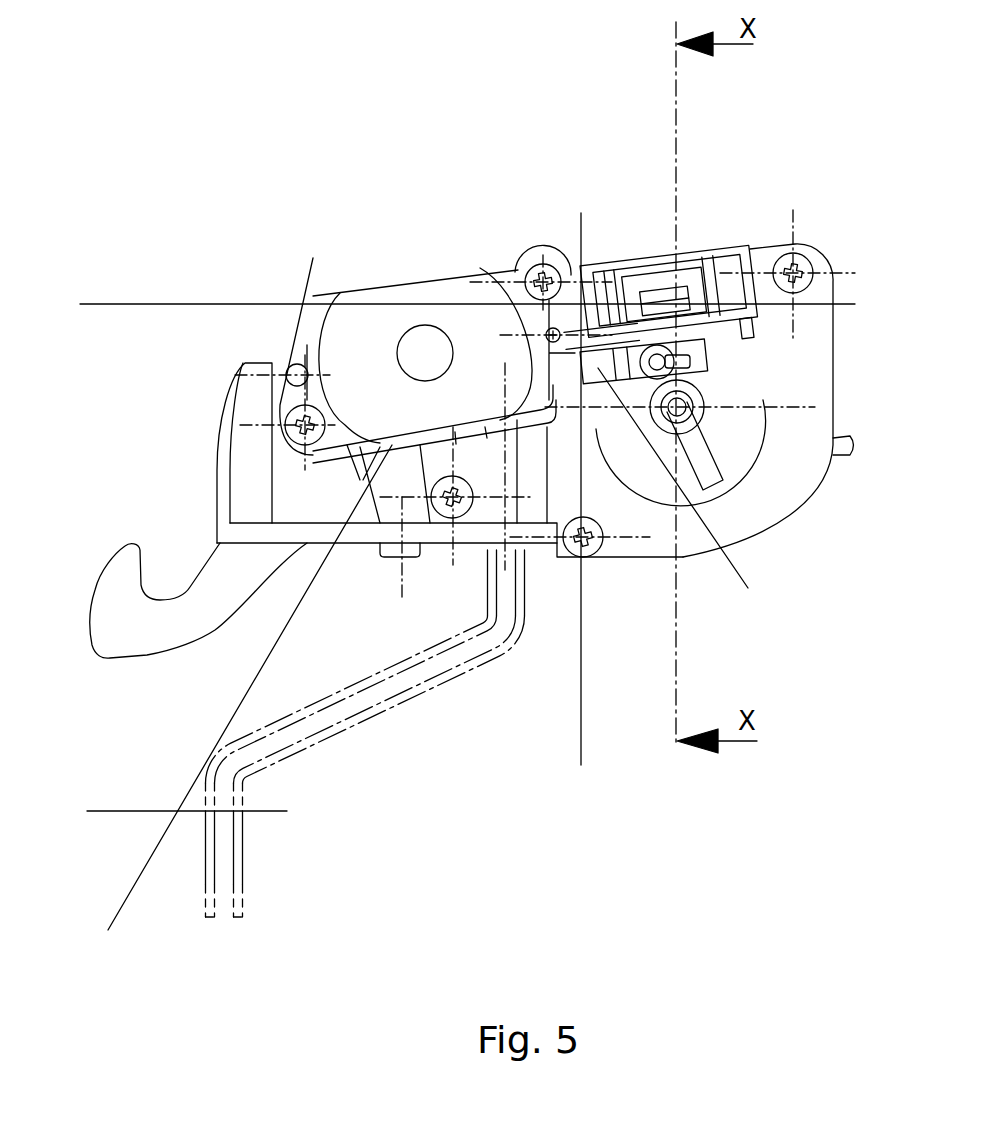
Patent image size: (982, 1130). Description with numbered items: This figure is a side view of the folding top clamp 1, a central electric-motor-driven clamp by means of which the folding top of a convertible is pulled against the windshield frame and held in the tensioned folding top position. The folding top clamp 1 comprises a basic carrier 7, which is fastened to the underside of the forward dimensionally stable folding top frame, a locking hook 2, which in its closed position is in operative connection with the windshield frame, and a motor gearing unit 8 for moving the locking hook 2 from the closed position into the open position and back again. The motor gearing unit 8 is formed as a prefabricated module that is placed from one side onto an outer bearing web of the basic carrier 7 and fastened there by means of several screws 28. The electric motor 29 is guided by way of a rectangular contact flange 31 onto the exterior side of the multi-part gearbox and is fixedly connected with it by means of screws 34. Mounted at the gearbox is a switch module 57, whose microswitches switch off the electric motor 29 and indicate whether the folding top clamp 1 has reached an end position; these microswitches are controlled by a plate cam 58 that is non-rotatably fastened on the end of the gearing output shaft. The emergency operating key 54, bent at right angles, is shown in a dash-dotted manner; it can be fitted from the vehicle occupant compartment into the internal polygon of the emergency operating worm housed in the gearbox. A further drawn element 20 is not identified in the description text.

The folding top clamp 1 is at (262, 270).
The locking hook 2 is at (107, 658).
The basic carrier 7 is at (245, 452).
The motor gearing unit 8 is at (387, 284).
The base plate 20 is at (390, 555).
The screws 28 is at (775, 263).
The electric motor 29 is at (372, 335).
The contact flange 31 is at (320, 352).
The screws 34 is at (547, 390).
The emergency operating key 54 is at (245, 847).
The switch module 57 is at (636, 270).
The plate cam 58 is at (700, 457).